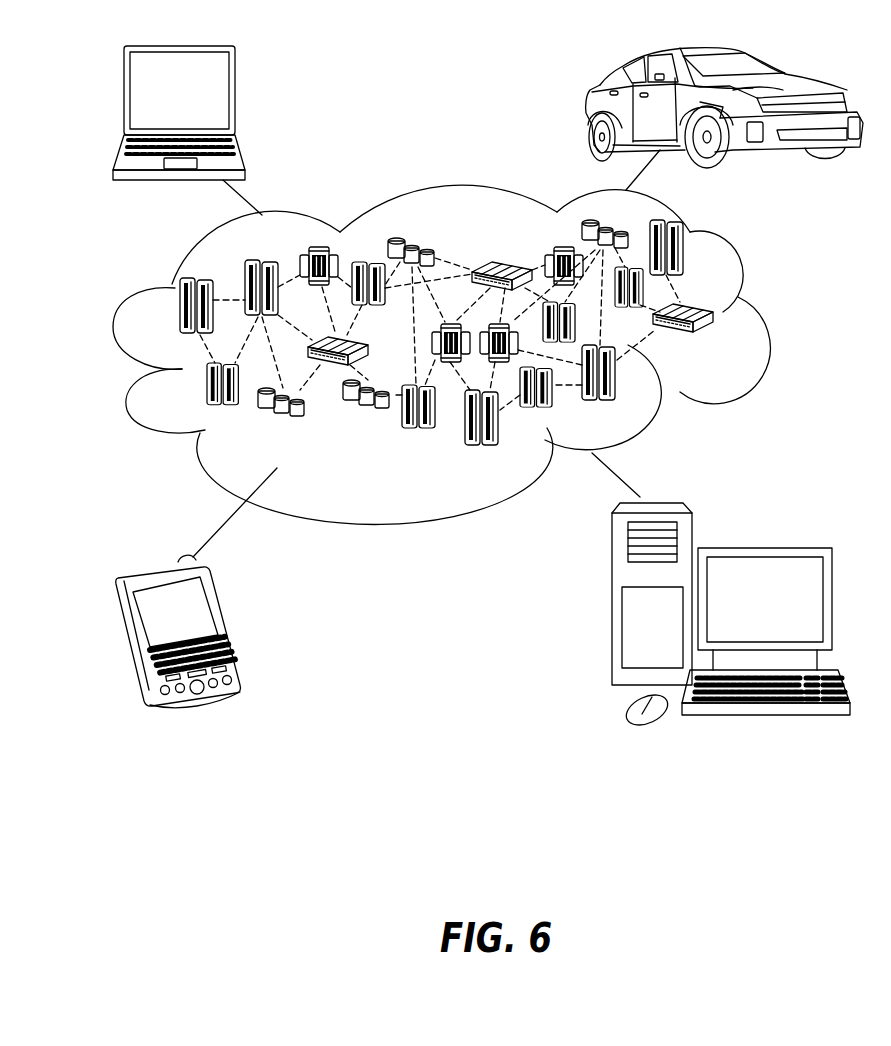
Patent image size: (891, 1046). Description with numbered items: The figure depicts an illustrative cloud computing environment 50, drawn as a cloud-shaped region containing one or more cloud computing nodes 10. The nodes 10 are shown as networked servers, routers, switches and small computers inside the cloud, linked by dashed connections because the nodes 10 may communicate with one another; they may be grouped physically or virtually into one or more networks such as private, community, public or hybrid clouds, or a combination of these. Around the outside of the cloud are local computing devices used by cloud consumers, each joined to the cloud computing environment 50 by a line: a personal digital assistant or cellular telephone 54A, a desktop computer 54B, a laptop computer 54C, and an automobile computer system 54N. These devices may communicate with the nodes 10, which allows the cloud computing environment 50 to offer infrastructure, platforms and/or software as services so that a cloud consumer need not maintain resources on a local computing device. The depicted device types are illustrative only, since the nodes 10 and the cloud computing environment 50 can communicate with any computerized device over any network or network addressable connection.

The cloud computing environment 50 is at (762, 315).
The cloud computing nodes 10 is at (716, 342).
The personal digital assistant (PDA) or cellular telephone 54A is at (227, 623).
The desktop computer 54B is at (763, 548).
The laptop computer 54C is at (235, 97).
The automobile computer system 54N is at (586, 108).